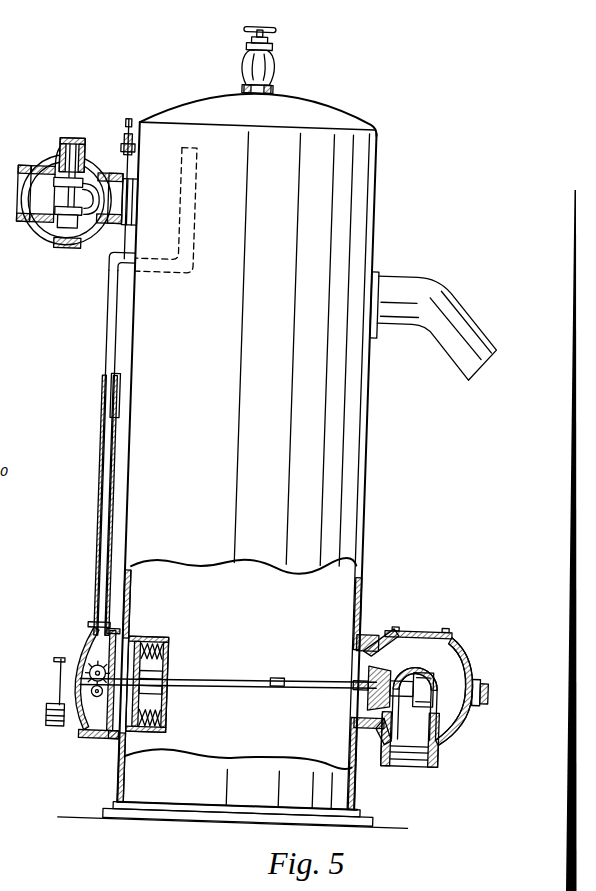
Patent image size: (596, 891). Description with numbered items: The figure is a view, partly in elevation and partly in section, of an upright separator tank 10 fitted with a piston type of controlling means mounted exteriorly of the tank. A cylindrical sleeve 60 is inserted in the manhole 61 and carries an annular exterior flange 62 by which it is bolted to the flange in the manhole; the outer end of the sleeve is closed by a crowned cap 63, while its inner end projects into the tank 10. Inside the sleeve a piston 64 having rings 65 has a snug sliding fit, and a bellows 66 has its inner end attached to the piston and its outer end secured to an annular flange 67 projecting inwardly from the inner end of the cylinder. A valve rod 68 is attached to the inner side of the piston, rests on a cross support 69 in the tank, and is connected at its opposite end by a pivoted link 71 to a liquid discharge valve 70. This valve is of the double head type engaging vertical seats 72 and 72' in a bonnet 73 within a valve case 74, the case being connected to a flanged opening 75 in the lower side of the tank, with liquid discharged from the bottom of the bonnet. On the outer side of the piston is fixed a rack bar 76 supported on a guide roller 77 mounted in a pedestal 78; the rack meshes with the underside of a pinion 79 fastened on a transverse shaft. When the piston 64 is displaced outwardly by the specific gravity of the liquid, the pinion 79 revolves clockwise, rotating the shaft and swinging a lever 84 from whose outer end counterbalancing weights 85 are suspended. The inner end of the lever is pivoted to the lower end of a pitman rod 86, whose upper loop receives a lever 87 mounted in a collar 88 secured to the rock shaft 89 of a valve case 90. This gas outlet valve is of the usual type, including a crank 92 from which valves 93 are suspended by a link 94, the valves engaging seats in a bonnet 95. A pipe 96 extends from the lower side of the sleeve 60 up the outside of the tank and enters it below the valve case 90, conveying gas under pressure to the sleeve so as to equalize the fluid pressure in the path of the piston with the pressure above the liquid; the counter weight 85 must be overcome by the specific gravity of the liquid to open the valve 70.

The separator tank 10 is at (366, 392).
The cylindrical sleeve 60 is at (140, 636).
The manhole 61 is at (136, 625).
The annular exterior flange 62 is at (106, 738).
The crowned cap 63 is at (72, 683).
The piston 64 is at (162, 690).
The rings 65 is at (120, 735).
The bellows 66 is at (163, 652).
The annular flange 67 is at (167, 640).
The valve rod 68 is at (252, 684).
The cross support 69 is at (282, 681).
The liquid discharge valve 70 is at (377, 698).
The pivoted link 71 is at (362, 680).
The vertical seat 72 is at (418, 624).
The vertical seat 72' is at (470, 667).
The bonnet 73 is at (420, 650).
The valve case 74 is at (446, 742).
The flanged opening 75 is at (374, 636).
The rack bar 76 is at (162, 672).
The guide roller 77 is at (93, 696).
The pedestal 78 is at (80, 735).
The pinion 79 is at (89, 669).
The lever 84 is at (55, 660).
The counterbalancing weights 85 is at (47, 716).
The pitman rod 86 is at (113, 504).
The lever 87 is at (128, 133).
The collar 88 is at (129, 148).
The rock shaft 89 is at (121, 142).
The valve case 90 is at (44, 236).
The crank 92 is at (72, 138).
The valves 93 is at (78, 248).
The link 94 is at (66, 180).
The bonnet 95 is at (134, 195).
The pipe 96 is at (104, 547).